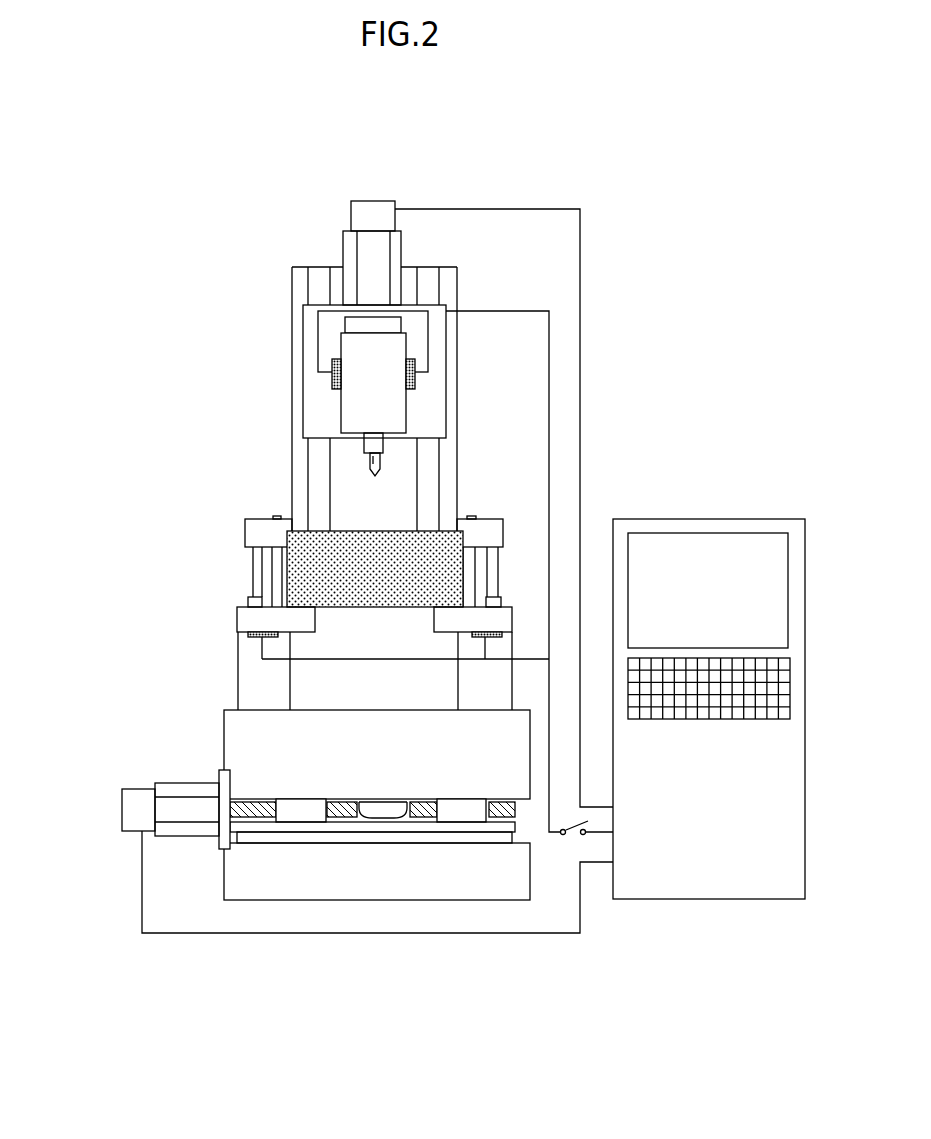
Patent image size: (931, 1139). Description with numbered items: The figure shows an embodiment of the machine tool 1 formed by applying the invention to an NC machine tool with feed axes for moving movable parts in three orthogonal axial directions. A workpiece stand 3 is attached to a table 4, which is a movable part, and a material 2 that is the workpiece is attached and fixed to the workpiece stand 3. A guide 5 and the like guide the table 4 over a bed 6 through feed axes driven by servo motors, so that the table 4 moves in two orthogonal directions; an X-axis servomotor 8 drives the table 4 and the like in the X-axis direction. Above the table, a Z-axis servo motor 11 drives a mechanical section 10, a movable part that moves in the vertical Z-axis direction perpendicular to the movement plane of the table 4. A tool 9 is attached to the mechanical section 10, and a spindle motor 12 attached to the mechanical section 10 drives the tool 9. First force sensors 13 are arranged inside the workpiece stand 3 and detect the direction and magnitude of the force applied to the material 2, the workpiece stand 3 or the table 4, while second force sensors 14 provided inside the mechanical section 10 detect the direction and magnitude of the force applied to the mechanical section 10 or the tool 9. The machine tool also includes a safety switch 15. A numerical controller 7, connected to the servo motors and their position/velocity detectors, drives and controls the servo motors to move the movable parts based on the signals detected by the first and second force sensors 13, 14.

The machine tool 1 is at (290, 202).
The material 2 is at (308, 561).
The workpiece stand 3 is at (247, 620).
The table 4 is at (238, 720).
The guide 5 is at (290, 810).
The bed 6 is at (278, 887).
The numerical controller 7 is at (706, 524).
The X-axis servomotor 8 is at (128, 809).
The tool 9 is at (370, 462).
The mechanical section 10 is at (310, 317).
The Z-axis servo motor 11 is at (376, 209).
The spindle motor 12 is at (350, 418).
The first force sensors 13 is at (255, 640).
The second force sensors 14 is at (333, 382).
The safety switch 15 is at (574, 842).